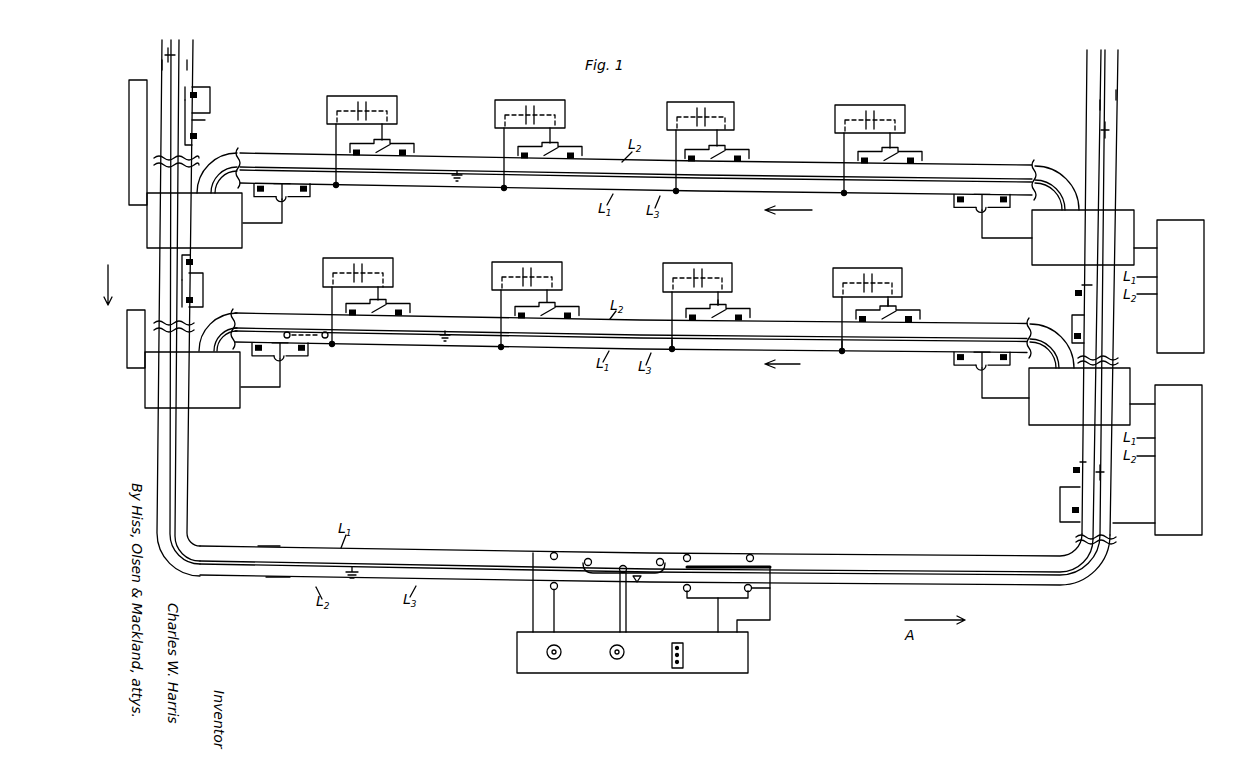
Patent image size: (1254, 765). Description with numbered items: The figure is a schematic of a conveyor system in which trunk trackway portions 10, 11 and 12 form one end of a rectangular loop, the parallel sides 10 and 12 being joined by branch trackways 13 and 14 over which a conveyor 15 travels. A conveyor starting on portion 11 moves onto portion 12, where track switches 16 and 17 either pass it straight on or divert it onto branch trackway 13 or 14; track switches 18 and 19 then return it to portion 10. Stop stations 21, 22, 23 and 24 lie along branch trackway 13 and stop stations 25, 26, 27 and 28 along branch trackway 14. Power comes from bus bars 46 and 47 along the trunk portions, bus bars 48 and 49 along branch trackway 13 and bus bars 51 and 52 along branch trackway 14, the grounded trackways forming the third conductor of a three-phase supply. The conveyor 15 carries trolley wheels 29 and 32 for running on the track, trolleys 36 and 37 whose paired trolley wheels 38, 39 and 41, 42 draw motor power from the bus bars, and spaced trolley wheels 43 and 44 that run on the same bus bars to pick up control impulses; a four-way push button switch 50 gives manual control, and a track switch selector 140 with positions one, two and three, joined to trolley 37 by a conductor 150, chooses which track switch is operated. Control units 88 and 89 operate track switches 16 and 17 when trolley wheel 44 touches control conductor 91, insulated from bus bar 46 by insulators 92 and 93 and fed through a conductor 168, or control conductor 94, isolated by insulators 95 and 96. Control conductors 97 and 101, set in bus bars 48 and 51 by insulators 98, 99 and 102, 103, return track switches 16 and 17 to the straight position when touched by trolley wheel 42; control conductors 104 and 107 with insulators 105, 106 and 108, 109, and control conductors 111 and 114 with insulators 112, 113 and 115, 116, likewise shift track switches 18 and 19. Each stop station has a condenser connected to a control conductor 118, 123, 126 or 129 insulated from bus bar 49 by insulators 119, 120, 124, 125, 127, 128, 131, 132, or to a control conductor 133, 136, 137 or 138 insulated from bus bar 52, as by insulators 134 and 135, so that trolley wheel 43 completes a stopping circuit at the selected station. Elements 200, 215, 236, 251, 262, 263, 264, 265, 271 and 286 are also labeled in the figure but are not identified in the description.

The trunk trackway portion 10 is at (176, 461).
The trunk trackway portion 11 is at (890, 553).
The trunk trackway portion 12 is at (1110, 160).
The branch trackway 13 is at (470, 339).
The branch trackway 14 is at (496, 177).
The conveyor 15 is at (567, 674).
The track switch 16 is at (1040, 425).
The track switch 17 is at (1038, 266).
The track switch 18 is at (237, 410).
The track switch 19 is at (243, 244).
The stop station 21 is at (896, 268).
The stop station 22 is at (700, 263).
The stop station 23 is at (540, 256).
The stop station 24 is at (372, 252).
The stop station 25 is at (880, 105).
The stop station 26 is at (714, 102).
The stop station 27 is at (530, 100).
The stop station 28 is at (376, 96).
The trolley wheel 29 is at (590, 557).
The trolley wheel 32 is at (661, 557).
The trolley 36 is at (705, 599).
The trolley 37 is at (716, 565).
The trolley wheel 38 is at (684, 592).
The trolley wheel 39 is at (772, 592).
The trolley wheel 41 is at (689, 555).
The trolley wheel 42 is at (754, 556).
The trolley wheel 43 is at (557, 591).
The trolley wheel 44 is at (558, 552).
The bus bar 46 is at (258, 546).
The bus bar 47 is at (266, 578).
The bus bar 48 is at (805, 355).
The bus bar 49 is at (815, 321).
The four-way push button switch 50 is at (684, 655).
The bus bar 51 is at (425, 187).
The bus bar 52 is at (437, 155).
The control unit 88 is at (1208, 424).
The control unit 89 is at (1205, 300).
The control conductor 91 is at (1060, 489).
The insulator 92 is at (1060, 521).
The insulator 93 is at (1072, 470).
The control conductor 94 is at (1071, 308).
The insulator 95 is at (1074, 295).
The insulator 96 is at (1075, 332).
The control conductor 97 is at (976, 370).
The insulator 98 is at (958, 369).
The insulator 99 is at (993, 368).
The control conductor 101 is at (976, 208).
The insulator 102 is at (955, 204).
The insulator 103 is at (1005, 212).
The control conductor 104 is at (286, 358).
The insulator 105 is at (258, 357).
The insulator 106 is at (306, 356).
The control conductor 107 is at (204, 276).
The insulator 108 is at (198, 264).
The insulator 109 is at (200, 299).
The control conductor 111 is at (291, 201).
The insulator 112 is at (261, 196).
The insulator 113 is at (309, 197).
The control conductor 114 is at (206, 120).
The insulator 115 is at (211, 96).
The insulator 116 is at (200, 137).
The control conductor 118 is at (896, 316).
The insulator 119 is at (845, 350).
The insulator 120 is at (890, 350).
The control conductor 123 is at (740, 316).
The insulator 124 is at (675, 348).
The insulator 125 is at (720, 348).
The control conductor 126 is at (556, 306).
The insulator 127 is at (504, 346).
The insulator 128 is at (550, 346).
The control conductor 129 is at (396, 306).
The insulator 131 is at (337, 344).
The insulator 132 is at (384, 344).
The control conductor 133 is at (889, 192).
The insulator 134 is at (849, 189).
The insulator 135 is at (925, 166).
The control conductor 136 is at (735, 155).
The control conductor 137 is at (564, 150).
The control conductor 138 is at (396, 146).
The track switch selector 140 is at (544, 667).
The conductor 150 is at (771, 615).
The conductor 168 is at (1140, 524).
The selector switch 200 is at (618, 661).
The conductor 215 is at (720, 611).
The conductor 236 is at (1141, 403).
The conductor 251 is at (998, 400).
The lead 262 is at (900, 300).
The lead 263 is at (836, 300).
The lead 264 is at (721, 299).
The lead 265 is at (672, 306).
The conductor 271 is at (263, 388).
The junction box 286 is at (140, 303).